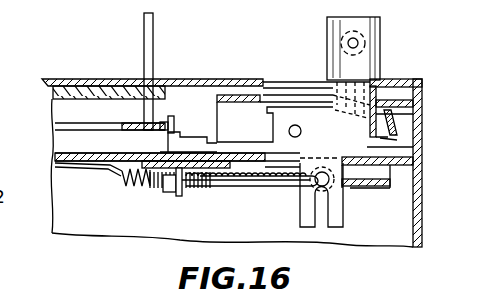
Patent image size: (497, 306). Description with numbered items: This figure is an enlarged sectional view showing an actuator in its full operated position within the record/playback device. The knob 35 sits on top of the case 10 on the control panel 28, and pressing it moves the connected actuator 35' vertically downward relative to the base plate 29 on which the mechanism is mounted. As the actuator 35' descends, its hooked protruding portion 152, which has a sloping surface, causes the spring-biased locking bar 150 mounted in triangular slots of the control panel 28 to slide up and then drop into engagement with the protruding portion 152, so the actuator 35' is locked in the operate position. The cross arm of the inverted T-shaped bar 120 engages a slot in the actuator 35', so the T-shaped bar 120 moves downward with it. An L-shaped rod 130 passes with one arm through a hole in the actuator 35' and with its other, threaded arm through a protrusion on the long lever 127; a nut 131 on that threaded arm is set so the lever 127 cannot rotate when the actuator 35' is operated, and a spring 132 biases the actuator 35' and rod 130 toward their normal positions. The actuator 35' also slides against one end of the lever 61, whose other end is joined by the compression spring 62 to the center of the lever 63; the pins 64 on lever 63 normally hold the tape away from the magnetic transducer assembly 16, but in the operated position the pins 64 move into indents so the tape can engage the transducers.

The case 10 is at (423, 224).
The magnetic transducer assembly 16 is at (38, 80).
The control panel 28 is at (403, 100).
The base plate 29 is at (408, 173).
The knob 35 is at (379, 47).
The actuator 35' is at (327, 80).
The lever 61 is at (192, 133).
The compression spring 62 is at (171, 116).
The lever 63 is at (60, 125).
The pins 64 is at (155, 32).
The inverted T-shaped bar 120 is at (373, 187).
The lever 127 is at (200, 187).
The L-shaped rod 130 is at (255, 187).
The nut 131 is at (173, 198).
The spring 132 is at (121, 186).
The locking bar 150 is at (395, 117).
The protruding portion 152 is at (397, 140).